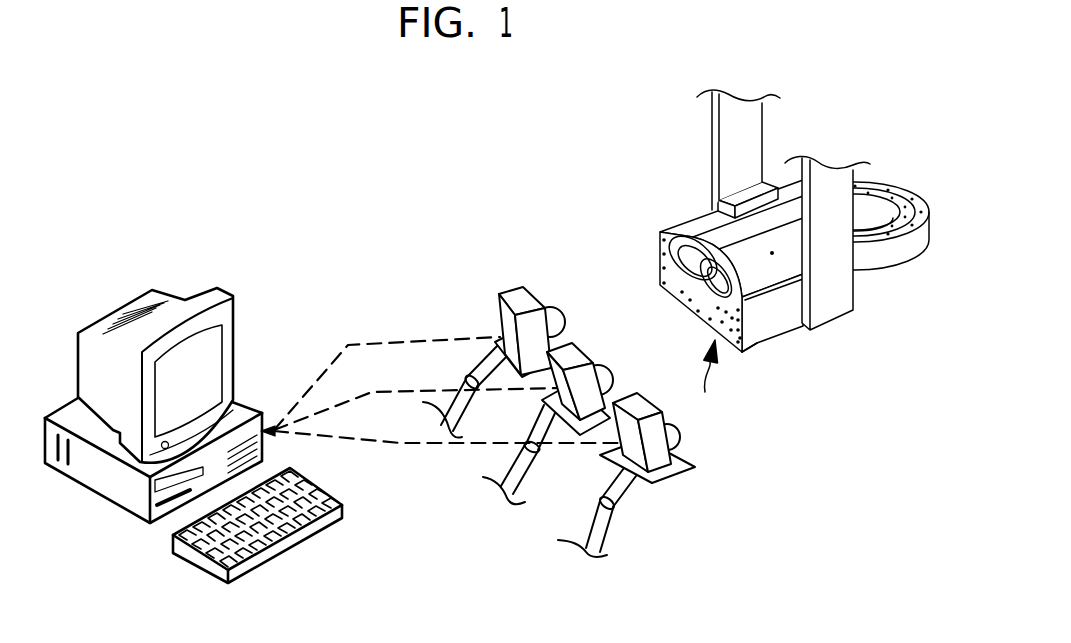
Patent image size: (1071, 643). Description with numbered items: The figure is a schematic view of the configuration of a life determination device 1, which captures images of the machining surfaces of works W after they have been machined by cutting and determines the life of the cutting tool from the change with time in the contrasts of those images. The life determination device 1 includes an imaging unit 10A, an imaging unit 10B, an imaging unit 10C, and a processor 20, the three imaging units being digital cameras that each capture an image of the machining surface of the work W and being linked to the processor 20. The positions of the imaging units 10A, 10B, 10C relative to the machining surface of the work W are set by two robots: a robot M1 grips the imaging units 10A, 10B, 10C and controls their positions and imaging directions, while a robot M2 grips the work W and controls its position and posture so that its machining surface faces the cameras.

The life determination device 1 is at (152, 141).
The processor 20 is at (205, 298).
The imaging unit 10A is at (574, 352).
The imaging unit 10B is at (515, 297).
The imaging unit 10C is at (643, 403).
The work W is at (690, 227).
The robot M1 is at (650, 556).
The robot M2 is at (672, 141).